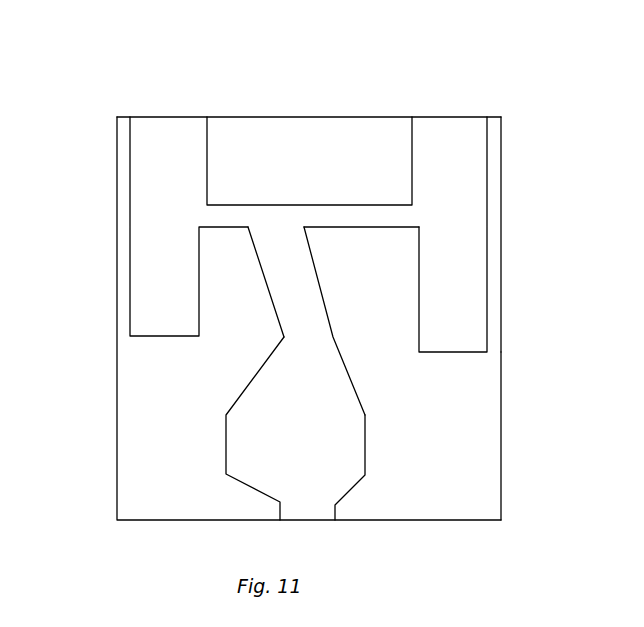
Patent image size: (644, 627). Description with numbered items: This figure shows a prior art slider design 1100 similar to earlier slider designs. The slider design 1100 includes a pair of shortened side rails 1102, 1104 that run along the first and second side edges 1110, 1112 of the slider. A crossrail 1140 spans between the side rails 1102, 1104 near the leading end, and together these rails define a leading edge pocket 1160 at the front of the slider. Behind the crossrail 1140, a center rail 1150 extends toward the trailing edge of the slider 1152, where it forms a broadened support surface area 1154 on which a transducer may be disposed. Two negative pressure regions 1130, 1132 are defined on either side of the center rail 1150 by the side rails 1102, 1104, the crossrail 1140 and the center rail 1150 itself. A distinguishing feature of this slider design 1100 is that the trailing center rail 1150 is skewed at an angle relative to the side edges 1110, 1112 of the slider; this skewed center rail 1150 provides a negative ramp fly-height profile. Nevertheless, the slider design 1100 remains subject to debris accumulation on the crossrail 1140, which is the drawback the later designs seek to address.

The slider design 1100 is at (120, 70).
The first side edge 1110 is at (117, 394).
The second side edge 1112 is at (501, 131).
The trailing edge of the slider 1152 is at (514, 490).
The side rail 1102 is at (142, 237).
The side rail 1104 is at (481, 223).
The leading edge pocket 1160 is at (243, 126).
The crossrail 1140 is at (377, 227).
The center rail 1150 is at (258, 262).
The negative pressure region 1130 is at (225, 340).
The negative pressure region 1132 is at (380, 340).
The broadened support surface area 1154 is at (353, 453).